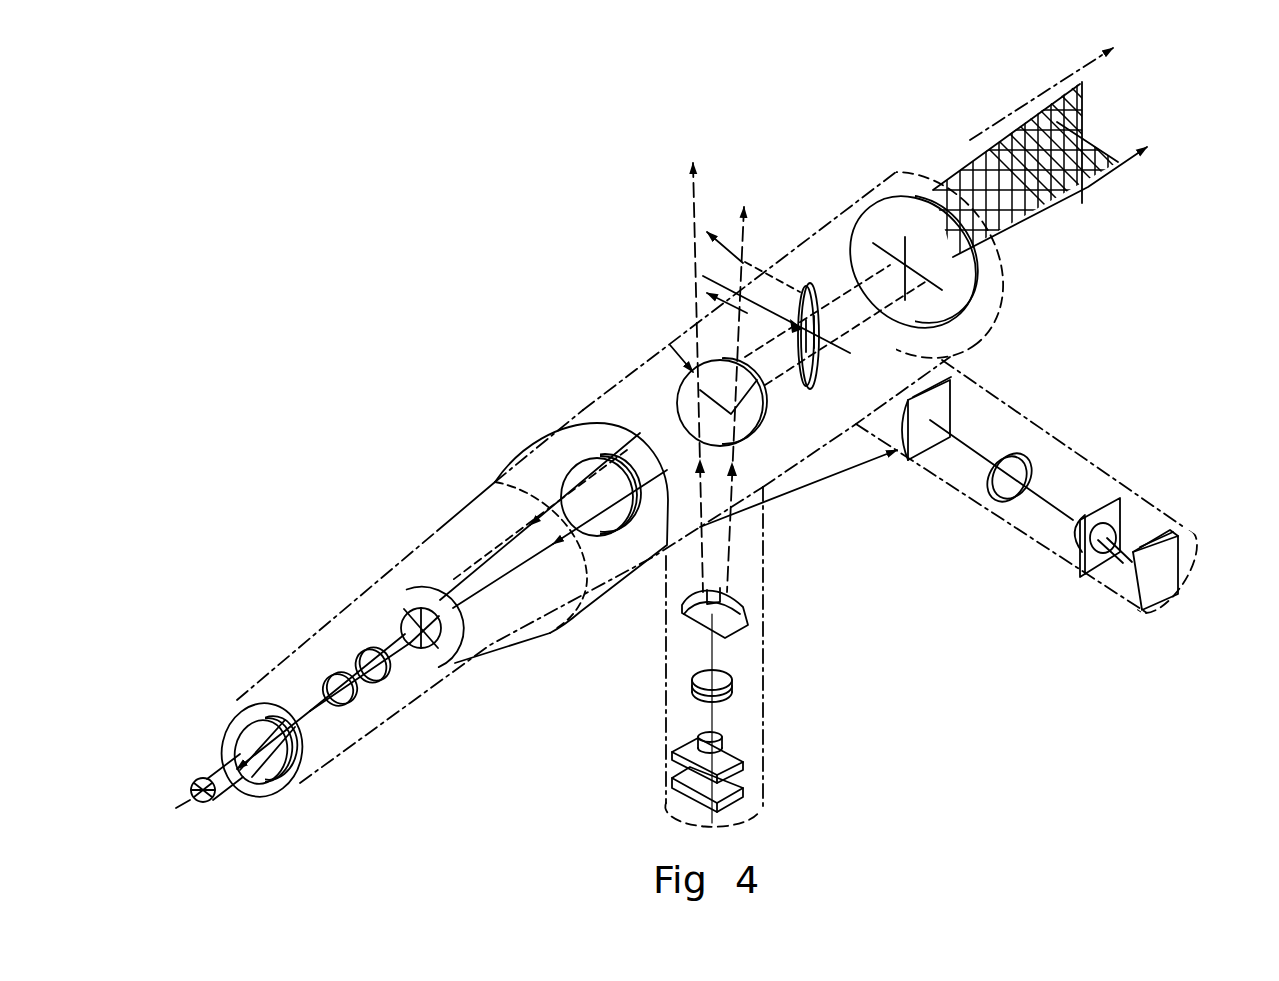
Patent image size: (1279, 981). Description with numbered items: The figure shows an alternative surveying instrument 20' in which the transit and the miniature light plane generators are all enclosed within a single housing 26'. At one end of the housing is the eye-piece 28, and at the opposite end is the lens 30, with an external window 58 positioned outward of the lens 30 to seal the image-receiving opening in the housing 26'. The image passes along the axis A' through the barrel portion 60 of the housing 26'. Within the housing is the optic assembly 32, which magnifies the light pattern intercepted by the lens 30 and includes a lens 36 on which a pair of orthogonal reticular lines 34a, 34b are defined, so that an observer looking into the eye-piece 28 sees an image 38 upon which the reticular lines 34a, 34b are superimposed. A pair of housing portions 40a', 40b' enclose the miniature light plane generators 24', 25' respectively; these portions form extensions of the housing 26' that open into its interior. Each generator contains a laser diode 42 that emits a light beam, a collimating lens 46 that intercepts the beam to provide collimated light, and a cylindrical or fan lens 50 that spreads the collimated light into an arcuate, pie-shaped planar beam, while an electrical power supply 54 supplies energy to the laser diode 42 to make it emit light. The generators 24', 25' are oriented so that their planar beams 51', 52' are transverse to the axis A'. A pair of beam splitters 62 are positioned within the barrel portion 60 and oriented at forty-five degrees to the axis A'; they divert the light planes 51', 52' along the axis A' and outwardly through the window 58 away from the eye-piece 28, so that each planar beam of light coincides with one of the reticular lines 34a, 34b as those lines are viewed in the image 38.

The alternative surveying instrument 20' is at (500, 594).
The miniature light plane generator 24' is at (675, 691).
The miniature light plane generator 25' is at (1063, 444).
The housing 26' is at (820, 312).
The eye-piece 28 is at (287, 770).
The lens 30 is at (583, 460).
The optic assembly 32 is at (363, 650).
The reticular line 34a is at (411, 617).
The reticular line 34b is at (433, 647).
The lens 36 is at (430, 652).
The image 38 is at (213, 806).
The housing portion 40a' is at (808, 648).
The housing portion 40b' is at (1033, 513).
The laser diode 42 is at (1080, 580).
The collimating lens 46 is at (993, 500).
The cylindrical lens 50 is at (750, 583).
The light plane 51' is at (873, 377).
The light plane 52' is at (913, 387).
The electrical power supply 54 is at (677, 795).
The external window 58 is at (880, 193).
The barrel portion 60 is at (550, 433).
The beam splitters 62 is at (660, 332).
The axis A' is at (1072, 159).